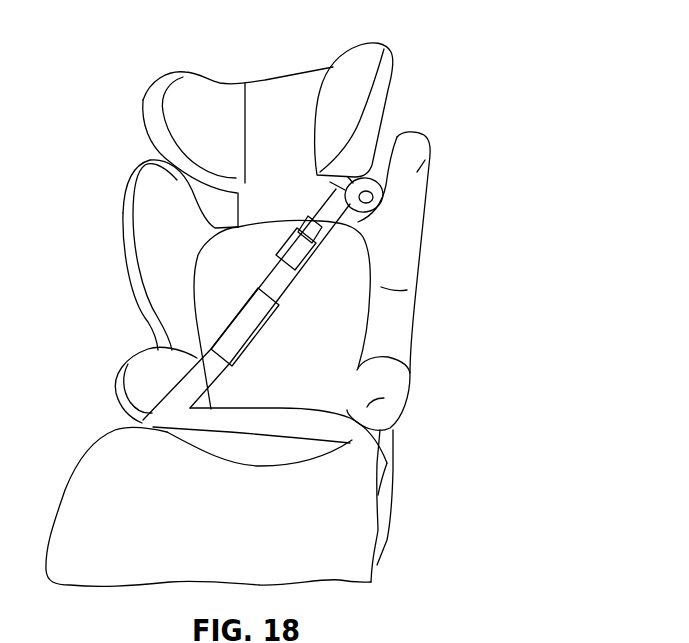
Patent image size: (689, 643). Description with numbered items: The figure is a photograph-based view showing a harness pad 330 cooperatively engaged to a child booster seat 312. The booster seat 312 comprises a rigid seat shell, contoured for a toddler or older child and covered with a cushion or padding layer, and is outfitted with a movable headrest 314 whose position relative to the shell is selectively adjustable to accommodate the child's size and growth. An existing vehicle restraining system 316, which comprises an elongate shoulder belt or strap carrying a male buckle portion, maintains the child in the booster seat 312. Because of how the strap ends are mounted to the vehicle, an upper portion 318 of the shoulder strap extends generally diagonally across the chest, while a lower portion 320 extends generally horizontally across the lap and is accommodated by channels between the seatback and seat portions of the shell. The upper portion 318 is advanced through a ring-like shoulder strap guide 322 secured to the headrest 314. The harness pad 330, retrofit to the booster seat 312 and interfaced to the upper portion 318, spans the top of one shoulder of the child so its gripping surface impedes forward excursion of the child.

The child booster seat 312 is at (440, 197).
The movable headrest 314 is at (378, 47).
The vehicle restraining system 316 is at (120, 418).
The upper portion of the shoulder strap 318 is at (365, 176).
The lower portion of the shoulder strap 320 is at (316, 422).
The shoulder strap guide 322 is at (344, 215).
The harness pad 330 is at (226, 315).